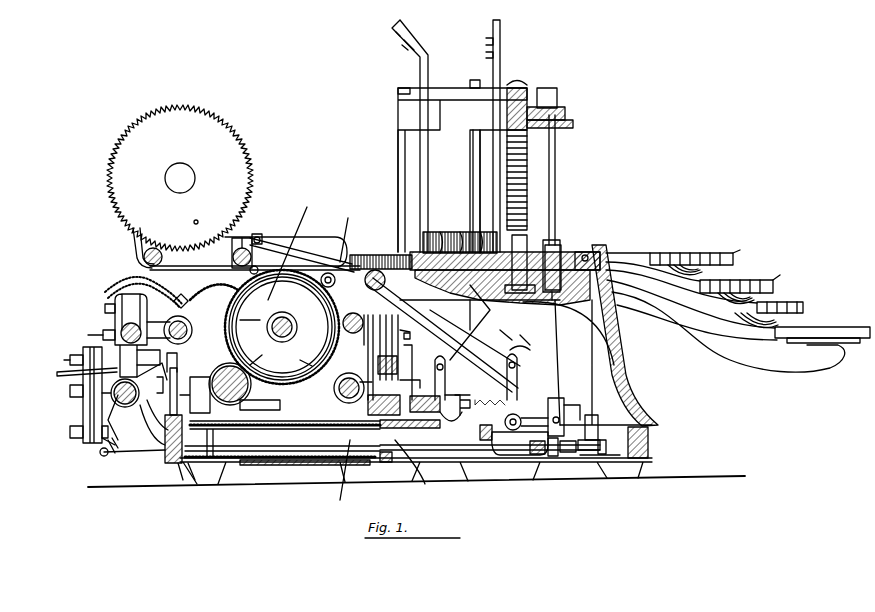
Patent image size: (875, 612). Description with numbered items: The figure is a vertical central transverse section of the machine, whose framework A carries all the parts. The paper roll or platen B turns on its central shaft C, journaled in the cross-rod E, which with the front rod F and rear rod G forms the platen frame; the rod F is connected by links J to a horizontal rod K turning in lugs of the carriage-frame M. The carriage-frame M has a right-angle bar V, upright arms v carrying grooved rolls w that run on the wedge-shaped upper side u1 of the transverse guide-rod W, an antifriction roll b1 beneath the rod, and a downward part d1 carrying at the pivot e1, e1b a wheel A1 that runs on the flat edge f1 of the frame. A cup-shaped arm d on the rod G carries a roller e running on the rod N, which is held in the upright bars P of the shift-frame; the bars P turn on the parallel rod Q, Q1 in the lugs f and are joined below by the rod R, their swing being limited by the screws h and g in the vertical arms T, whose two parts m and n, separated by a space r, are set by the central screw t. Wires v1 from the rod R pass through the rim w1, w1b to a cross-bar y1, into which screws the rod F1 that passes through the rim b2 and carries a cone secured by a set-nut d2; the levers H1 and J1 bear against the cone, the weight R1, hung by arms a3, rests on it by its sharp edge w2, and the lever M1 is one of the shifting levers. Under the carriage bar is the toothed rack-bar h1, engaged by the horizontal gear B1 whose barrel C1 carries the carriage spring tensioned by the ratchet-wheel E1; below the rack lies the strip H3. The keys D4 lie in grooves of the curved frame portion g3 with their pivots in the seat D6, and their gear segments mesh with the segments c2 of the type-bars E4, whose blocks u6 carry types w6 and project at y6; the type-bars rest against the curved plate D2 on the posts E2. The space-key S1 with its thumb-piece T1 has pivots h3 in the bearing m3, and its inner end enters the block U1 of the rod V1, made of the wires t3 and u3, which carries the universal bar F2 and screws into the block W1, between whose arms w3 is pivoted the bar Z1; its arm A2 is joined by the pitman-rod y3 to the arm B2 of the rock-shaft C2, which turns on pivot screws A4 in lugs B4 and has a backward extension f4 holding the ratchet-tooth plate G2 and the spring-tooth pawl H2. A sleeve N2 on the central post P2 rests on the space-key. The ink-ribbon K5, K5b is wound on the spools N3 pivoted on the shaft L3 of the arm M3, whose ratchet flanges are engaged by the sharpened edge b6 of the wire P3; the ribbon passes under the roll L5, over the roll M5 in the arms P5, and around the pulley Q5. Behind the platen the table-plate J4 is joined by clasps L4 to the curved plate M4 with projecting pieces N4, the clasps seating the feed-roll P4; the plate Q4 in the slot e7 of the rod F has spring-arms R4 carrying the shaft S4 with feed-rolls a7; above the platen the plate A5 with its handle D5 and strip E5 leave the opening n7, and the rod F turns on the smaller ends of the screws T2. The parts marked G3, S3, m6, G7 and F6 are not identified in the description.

The toothed wheel N3 is at (240, 216).
The wheel hub L3 is at (195, 178).
The pin b6 is at (212, 215).
The hook K5 is at (135, 240).
The pivot L5 is at (143, 257).
The bar D5 is at (130, 270).
The bracket G3 is at (232, 260).
The link bar P3 is at (276, 238).
The pin S3 is at (260, 238).
The pawl M3 is at (262, 236).
The pin E5 is at (256, 266).
The roller R4 is at (329, 272).
The lever B is at (296, 250).
The lever S4 is at (351, 231).
The rack a7 is at (380, 255).
The block M5 is at (387, 255).
The frame m6 is at (500, 278).
The upright E2 is at (398, 160).
The arm y6 is at (402, 26).
The lug w6 is at (431, 48).
The lug u6 is at (416, 48).
The screw f4 is at (468, 80).
The cap E4 is at (527, 82).
The block D6 is at (542, 88).
The plate F2 is at (565, 110).
The bracket D2 is at (573, 124).
The spring P2 is at (527, 175).
The rod t3 is at (556, 152).
The block V1 is at (556, 188).
The rod G7 is at (462, 191).
The rod Q is at (507, 182).
The plunger N2 is at (527, 240).
The block U1 is at (550, 290).
The pin h3 is at (585, 255).
The frame piece m3 is at (600, 252).
The frame column g3 is at (606, 252).
The frame A is at (622, 345).
The rod u3 is at (565, 320).
The type bar segment D4 is at (690, 253).
The type bar F6 is at (774, 257).
The platen bar T1 is at (822, 323).
The lever S1 is at (695, 345).
The wheel E is at (282, 327).
The shaft C is at (298, 326).
The ring Q4 is at (320, 296).
The arm n7 is at (253, 307).
The arm P4 is at (258, 352).
The arm M4 is at (298, 353).
The pivot e7 is at (365, 304).
The band A5 is at (214, 287).
The band J4 is at (165, 290).
The pivot L4 is at (236, 403).
The pivot J is at (345, 402).
The link K is at (356, 397).
The bar M1 is at (312, 396).
The bars N4 is at (386, 315).
The bar F is at (366, 322).
The link w is at (396, 322).
The pin v is at (410, 336).
The block W is at (400, 362).
The bar M is at (413, 372).
The link u1 is at (394, 379).
The block w1 is at (385, 394).
The block G2 is at (425, 396).
The link c2 is at (457, 400).
The bar H2 is at (422, 420).
The lever B2 is at (470, 312).
The arm A2 is at (518, 366).
The link K5b is at (475, 329).
The pin P5 is at (485, 316).
The pin C2 is at (510, 327).
The pin y3 is at (533, 331).
The link Q5 is at (521, 341).
The spring w3 is at (495, 391).
The upright W1 is at (562, 398).
The pivot Z1 is at (516, 422).
The link J1 is at (585, 392).
The block R1 is at (595, 415).
The bracket a3 is at (548, 428).
The block e1 is at (590, 440).
The block d2 is at (604, 440).
The rod F1 is at (510, 450).
The block b2 is at (545, 452).
The block H1 is at (585, 440).
The block C1 is at (598, 455).
The bar w2 is at (606, 455).
The base E1 is at (262, 470).
The bar B1 is at (285, 439).
The rod V is at (282, 439).
The bar b1 is at (280, 446).
The block y1 is at (388, 462).
The link h1 is at (343, 470).
The link H3 is at (415, 470).
The block T2 is at (190, 485).
The bar w1b is at (169, 422).
The link v1 is at (135, 451).
The pivot r is at (117, 393).
The key lever P is at (54, 370).
The frame bars T is at (80, 408).
The screw h is at (65, 351).
The screw Q1 is at (68, 388).
The pin t is at (83, 393).
The screw g is at (68, 432).
The link n is at (95, 443).
The link R is at (96, 454).
The pin m is at (105, 445).
The arm f is at (154, 422).
The arm f1 is at (142, 401).
The bracket e is at (126, 306).
The screw d is at (103, 308).
The screw B4 is at (89, 326).
The link A4 is at (103, 332).
The pivot G is at (184, 342).
The block N is at (148, 355).
The arm A1 is at (173, 355).
The pin e1b is at (154, 379).
The arm d1 is at (195, 386).